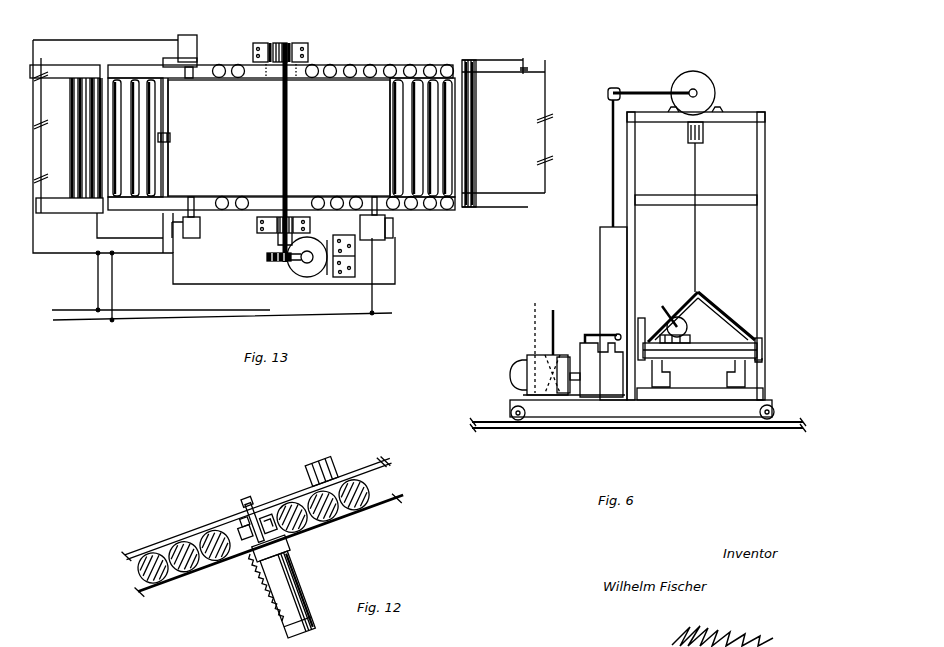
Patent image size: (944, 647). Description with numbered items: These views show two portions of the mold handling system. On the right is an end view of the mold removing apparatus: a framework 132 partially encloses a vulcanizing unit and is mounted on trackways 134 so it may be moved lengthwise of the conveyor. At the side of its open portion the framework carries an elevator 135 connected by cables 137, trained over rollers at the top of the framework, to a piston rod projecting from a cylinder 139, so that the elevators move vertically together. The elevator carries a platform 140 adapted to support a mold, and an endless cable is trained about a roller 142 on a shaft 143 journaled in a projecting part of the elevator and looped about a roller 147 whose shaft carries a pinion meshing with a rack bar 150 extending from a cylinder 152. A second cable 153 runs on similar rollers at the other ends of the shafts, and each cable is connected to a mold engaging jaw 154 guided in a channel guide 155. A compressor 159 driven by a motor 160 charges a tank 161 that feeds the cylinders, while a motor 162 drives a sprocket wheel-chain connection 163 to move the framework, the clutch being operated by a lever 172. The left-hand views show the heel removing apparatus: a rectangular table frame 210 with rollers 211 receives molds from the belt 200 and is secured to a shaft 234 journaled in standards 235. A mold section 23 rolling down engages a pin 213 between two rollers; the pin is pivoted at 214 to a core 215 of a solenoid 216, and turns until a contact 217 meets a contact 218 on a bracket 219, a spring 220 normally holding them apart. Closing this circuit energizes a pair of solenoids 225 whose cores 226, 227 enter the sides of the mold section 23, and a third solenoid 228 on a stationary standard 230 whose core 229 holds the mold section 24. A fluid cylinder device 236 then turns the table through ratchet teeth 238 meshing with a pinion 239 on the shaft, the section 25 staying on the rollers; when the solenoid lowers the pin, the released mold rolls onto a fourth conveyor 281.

In FIG. 13, the mold section 23 is at (225, 77).
In FIG. 13, the mold section 24 is at (338, 85).
In FIG. 13, the belt 200 is at (530, 80).
In FIG. 13, the rectangular table frame 210 is at (395, 66).
In FIG. 13, the rollers 211 is at (425, 75).
In FIG. 12, the rollers 211 is at (283, 531).
In FIG. 13, the pin 213 is at (167, 133).
In FIG. 12, the pin 213 is at (235, 495).
In FIG. 13, the spring 220 is at (193, 40).
In FIG. 12, the spring 220 is at (282, 492).
In FIG. 13, the core 226 is at (193, 67).
In FIG. 13, the core 227 is at (202, 195).
In FIG. 13, the solenoids 225 is at (203, 234).
In FIG. 13, the standards 235 is at (268, 48).
In FIG. 13, the shaft 234 is at (278, 242).
In FIG. 13, the pinion 239 is at (283, 257).
In FIG. 13, the ratchet teeth 238 is at (307, 263).
In FIG. 13, the fluid cylinder device 236 is at (320, 270).
In FIG. 13, the third solenoid 228 is at (387, 242).
In FIG. 13, the standard 230 is at (392, 236).
In FIG. 13, the core 229 is at (393, 210).
In FIG. 13, the fourth conveyor 281 is at (68, 83).
In FIG. 6, the framework 132 is at (766, 248).
In FIG. 6, the trackways 134 is at (755, 423).
In FIG. 6, the elevator 135 is at (710, 307).
In FIG. 6, the cables 137 is at (698, 170).
In FIG. 6, the cylinder 139 is at (712, 82).
In FIG. 6, the platform 140 is at (683, 392).
In FIG. 6, the roller 142 is at (762, 348).
In FIG. 6, the shaft 143 is at (737, 350).
In FIG. 6, the roller 147 is at (643, 320).
In FIG. 6, the rack bar 150 is at (688, 328).
In FIG. 6, the cylinder 152 is at (700, 293).
In FIG. 6, the second cable 153 is at (762, 361).
In FIG. 6, the mold engaging jaw 154 is at (668, 374).
In FIG. 6, the channel guide 155 is at (727, 368).
In FIG. 6, the compressor 159 is at (592, 382).
In FIG. 6, the motor 160 is at (518, 367).
In FIG. 6, the tank 161 is at (605, 281).
In FIG. 6, the motor 162 is at (542, 326).
In FIG. 6, the sprocket wheel-chain connection 163 is at (537, 402).
In FIG. 6, the lever 172 is at (556, 313).
In FIG. 12, the mold section 25 is at (260, 518).
In FIG. 12, the pivot 214 is at (219, 588).
In FIG. 12, the core 215 is at (296, 556).
In FIG. 12, the solenoid 216 is at (311, 586).
In FIG. 12, the contact 217 is at (236, 503).
In FIG. 12, the contact 218 is at (218, 514).
In FIG. 12, the bracket 219 is at (213, 526).